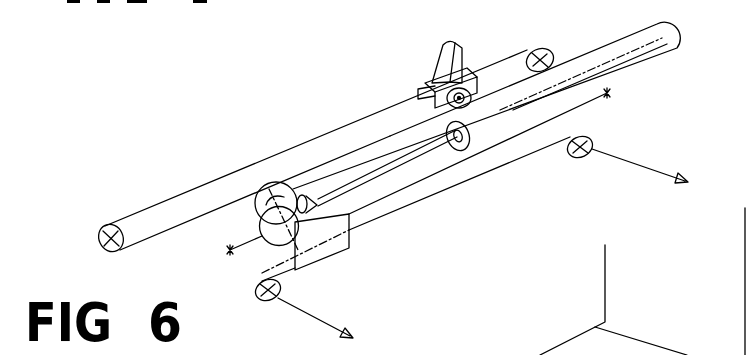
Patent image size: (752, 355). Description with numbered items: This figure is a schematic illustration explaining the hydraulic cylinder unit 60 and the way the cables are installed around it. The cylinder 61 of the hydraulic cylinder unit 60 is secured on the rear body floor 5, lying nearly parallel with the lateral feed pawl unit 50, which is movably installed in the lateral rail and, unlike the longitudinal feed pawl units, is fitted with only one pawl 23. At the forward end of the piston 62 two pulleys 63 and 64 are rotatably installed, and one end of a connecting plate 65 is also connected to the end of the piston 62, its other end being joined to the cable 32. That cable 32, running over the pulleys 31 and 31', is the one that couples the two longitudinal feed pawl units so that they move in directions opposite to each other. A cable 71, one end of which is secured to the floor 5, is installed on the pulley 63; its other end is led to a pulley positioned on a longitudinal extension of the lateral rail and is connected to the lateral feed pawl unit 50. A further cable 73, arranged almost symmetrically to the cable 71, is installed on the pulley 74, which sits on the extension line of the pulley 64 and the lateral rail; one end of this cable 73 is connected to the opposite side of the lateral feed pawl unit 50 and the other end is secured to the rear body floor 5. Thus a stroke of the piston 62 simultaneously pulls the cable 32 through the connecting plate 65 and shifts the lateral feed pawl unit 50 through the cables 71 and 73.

The frame 5 is at (604, 291).
The pawl 23 is at (452, 55).
The pulley 31 is at (285, 306).
The pulley 31' is at (626, 167).
The cable 32 is at (477, 178).
The lateral feed pawl unit 50 is at (421, 93).
The hydraulic cylinder unit 60 is at (633, 72).
The cylinder 61 is at (628, 49).
The piston 62 is at (370, 174).
The pulley 63 is at (266, 192).
The pulley 64 is at (258, 224).
The connecting plate 65 is at (340, 252).
The cable 71 is at (283, 151).
The cable 73 is at (400, 190).
The pulley 74 is at (548, 50).